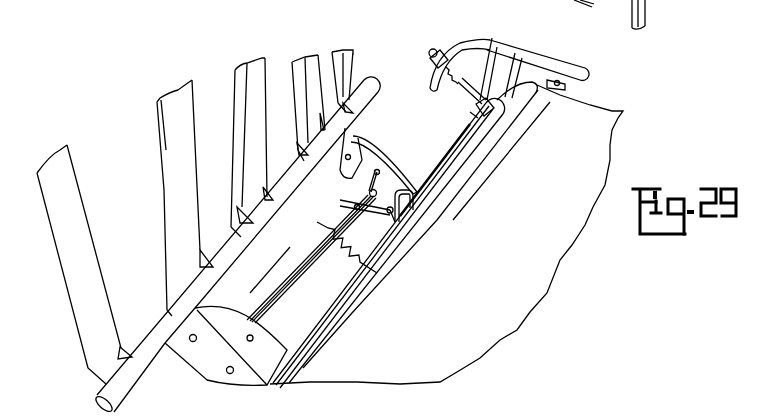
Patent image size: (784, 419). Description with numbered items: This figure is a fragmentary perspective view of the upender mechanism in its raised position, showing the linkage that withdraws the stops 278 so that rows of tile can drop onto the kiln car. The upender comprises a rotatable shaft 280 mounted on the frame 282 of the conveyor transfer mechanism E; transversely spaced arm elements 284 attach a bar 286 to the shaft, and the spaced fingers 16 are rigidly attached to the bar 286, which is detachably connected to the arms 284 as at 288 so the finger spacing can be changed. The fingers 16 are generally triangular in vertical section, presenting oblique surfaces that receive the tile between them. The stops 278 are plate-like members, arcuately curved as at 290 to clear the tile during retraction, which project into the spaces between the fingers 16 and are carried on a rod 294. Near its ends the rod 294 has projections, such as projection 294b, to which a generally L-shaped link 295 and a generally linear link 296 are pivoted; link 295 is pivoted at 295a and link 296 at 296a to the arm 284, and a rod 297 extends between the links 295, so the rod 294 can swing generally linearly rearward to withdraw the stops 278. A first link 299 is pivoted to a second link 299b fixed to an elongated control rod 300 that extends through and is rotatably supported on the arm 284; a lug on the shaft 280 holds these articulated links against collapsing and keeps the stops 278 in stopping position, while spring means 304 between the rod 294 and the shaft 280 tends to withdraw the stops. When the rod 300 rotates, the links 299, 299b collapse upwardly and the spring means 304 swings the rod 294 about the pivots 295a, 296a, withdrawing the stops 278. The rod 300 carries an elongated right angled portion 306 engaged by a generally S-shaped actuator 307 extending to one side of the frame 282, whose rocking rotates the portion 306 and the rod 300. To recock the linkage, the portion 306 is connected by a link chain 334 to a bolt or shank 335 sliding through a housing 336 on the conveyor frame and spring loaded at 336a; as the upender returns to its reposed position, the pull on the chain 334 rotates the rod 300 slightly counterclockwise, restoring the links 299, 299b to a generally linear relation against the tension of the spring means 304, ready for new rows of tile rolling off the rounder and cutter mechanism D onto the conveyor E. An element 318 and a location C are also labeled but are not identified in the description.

The fingers 16 is at (63, 157).
The stops 278 is at (163, 308).
The arcuate curve of stop 290 is at (283, 164).
The bar 286 is at (371, 86).
The arm elements 284 is at (362, 143).
The detachable connection 288 is at (228, 375).
The L-shaped link 295 is at (360, 158).
The pivot 295a is at (367, 145).
The linear link 296 is at (387, 188).
The pivot 296a is at (378, 173).
The first link 299 is at (405, 228).
The second link 299b is at (410, 192).
The rod 294 is at (279, 285).
The projection 294b is at (385, 255).
The rod 297 is at (290, 247).
The spring means 304 is at (363, 270).
The control rod 300 is at (463, 140).
The rotatable shaft 280 is at (470, 158).
The right angled portion 306 is at (485, 100).
The S-shaped actuator 307 is at (513, 53).
The frame 282 is at (578, 72).
The link chain 334 is at (457, 102).
The bolt or shank 335 is at (433, 49).
The housing 336 is at (440, 100).
The spring loading 336a is at (430, 62).
The post 318 is at (648, 12).
The conveyor transfer mechanism E is at (607, 118).
The rounder and cutter mechanism D is at (437, 412).
The point C is at (514, 412).